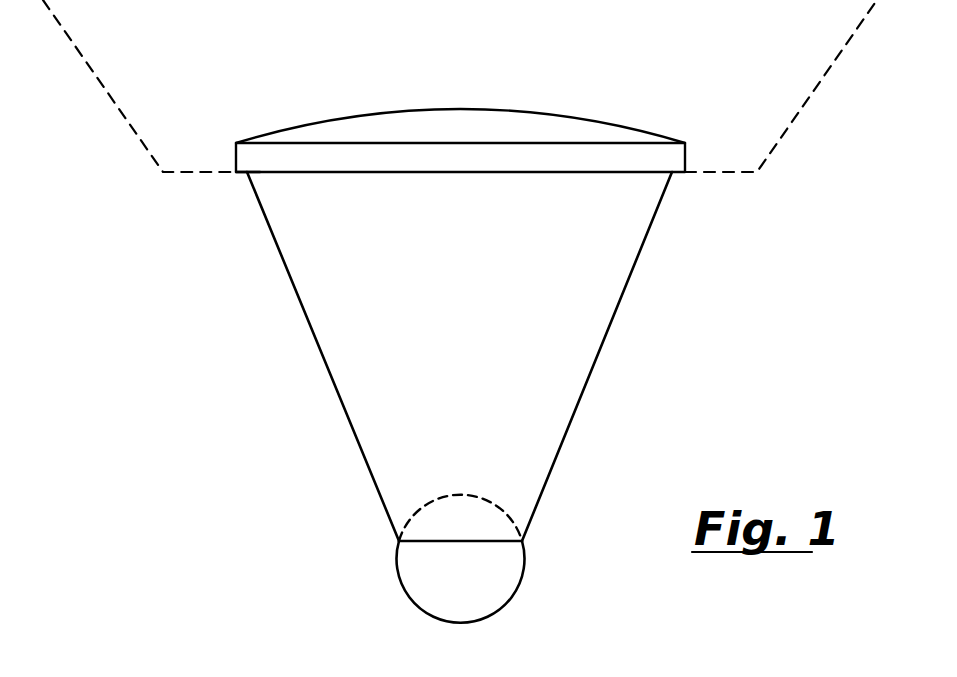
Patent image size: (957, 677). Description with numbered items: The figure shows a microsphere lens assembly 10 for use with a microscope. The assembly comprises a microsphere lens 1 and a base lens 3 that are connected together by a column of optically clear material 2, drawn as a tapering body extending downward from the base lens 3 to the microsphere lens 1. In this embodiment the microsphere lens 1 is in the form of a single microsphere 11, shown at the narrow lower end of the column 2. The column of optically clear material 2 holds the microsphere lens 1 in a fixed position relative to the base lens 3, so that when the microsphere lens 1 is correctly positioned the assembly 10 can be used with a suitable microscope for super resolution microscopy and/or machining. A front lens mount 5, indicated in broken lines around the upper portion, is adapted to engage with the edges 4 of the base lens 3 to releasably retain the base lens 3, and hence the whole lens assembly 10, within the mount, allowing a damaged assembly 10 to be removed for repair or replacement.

The microsphere lens 1 is at (395, 603).
The column of optically clear material 2 is at (553, 382).
The base lens 3 is at (617, 158).
The edges of the base lens 4 is at (245, 174).
The front lens mount 5 is at (73, 44).
The microsphere lens assembly 10 is at (757, 316).
The single microsphere 11 is at (485, 582).